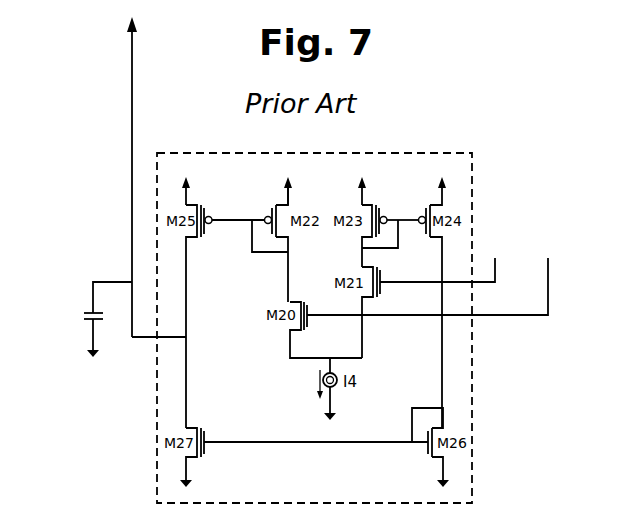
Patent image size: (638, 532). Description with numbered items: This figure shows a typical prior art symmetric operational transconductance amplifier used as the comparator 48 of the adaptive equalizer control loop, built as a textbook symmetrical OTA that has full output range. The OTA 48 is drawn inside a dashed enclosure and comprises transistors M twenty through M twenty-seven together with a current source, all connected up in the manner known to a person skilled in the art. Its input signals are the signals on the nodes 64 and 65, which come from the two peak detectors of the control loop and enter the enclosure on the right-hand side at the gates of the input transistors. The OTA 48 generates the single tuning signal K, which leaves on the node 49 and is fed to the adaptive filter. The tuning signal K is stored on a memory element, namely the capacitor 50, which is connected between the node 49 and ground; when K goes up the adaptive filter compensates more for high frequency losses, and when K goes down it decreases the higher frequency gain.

The comparator (OTA) 48 is at (157, 462).
The node 49 is at (132, 197).
The capacitor 50 is at (84, 315).
The node 64 is at (499, 273).
The node 65 is at (552, 272).